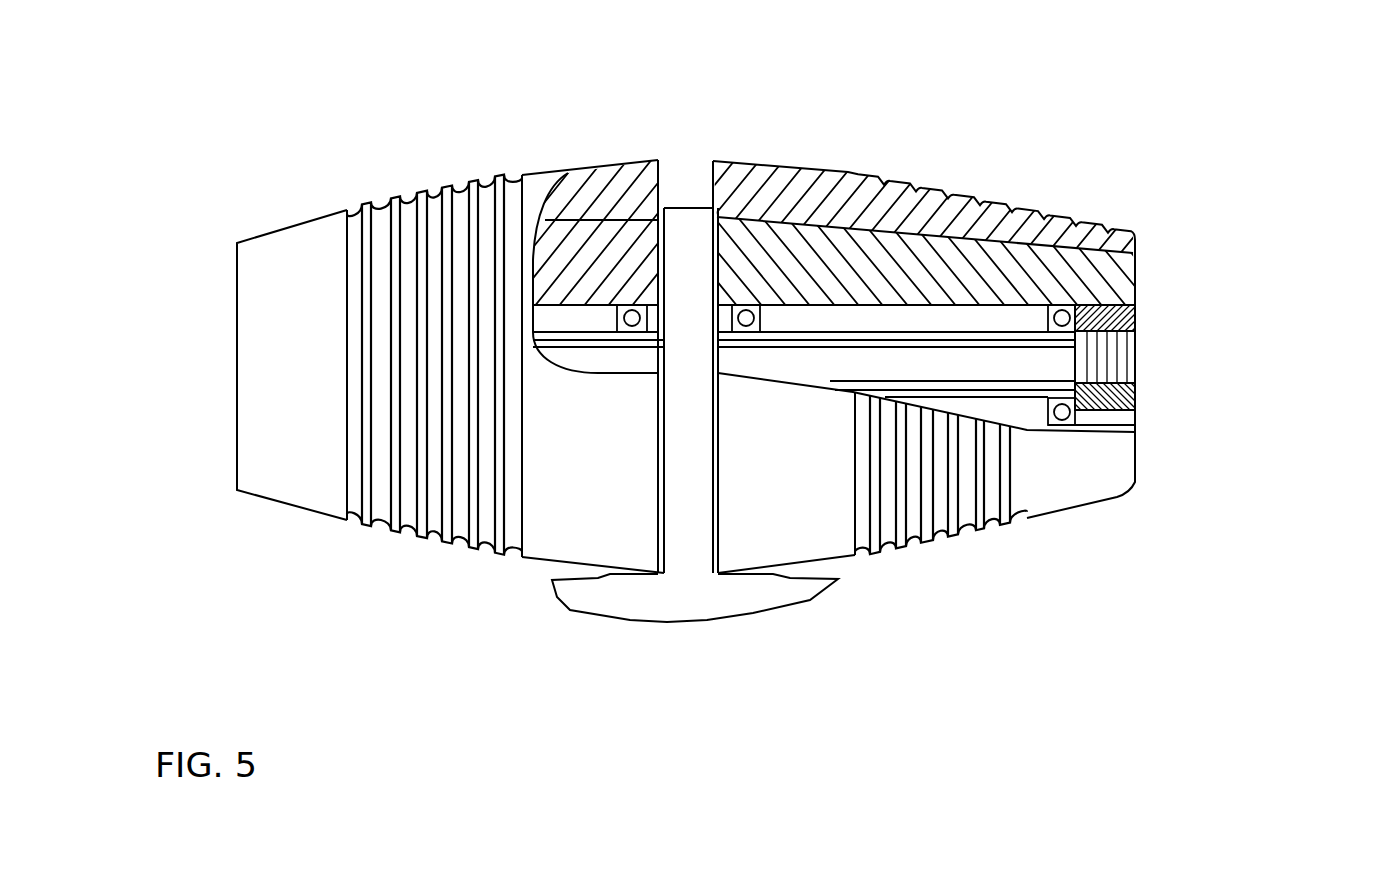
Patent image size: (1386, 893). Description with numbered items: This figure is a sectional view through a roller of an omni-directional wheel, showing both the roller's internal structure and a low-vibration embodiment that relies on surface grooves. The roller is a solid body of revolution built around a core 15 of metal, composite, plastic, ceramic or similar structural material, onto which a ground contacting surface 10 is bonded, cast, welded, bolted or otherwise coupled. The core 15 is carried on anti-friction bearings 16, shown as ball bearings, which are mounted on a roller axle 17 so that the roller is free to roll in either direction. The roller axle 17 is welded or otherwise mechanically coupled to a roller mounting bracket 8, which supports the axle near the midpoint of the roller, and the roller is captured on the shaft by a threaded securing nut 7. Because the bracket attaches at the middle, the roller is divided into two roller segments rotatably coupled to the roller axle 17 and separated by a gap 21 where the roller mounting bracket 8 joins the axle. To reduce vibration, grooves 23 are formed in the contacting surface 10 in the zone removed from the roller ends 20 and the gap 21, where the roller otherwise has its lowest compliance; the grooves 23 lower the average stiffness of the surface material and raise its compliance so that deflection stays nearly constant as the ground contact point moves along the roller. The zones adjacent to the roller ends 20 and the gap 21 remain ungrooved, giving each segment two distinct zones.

The threaded securing nut 7 is at (1130, 407).
The roller mounting bracket 8 is at (705, 530).
The ground contacting surface 10 is at (1135, 255).
The core 15 is at (645, 258).
The anti-friction bearings 16 is at (741, 312).
The roller axle 17 is at (1137, 360).
The roller ends 20 is at (285, 512).
The gap 21 is at (693, 178).
The grooves 23 is at (443, 547).